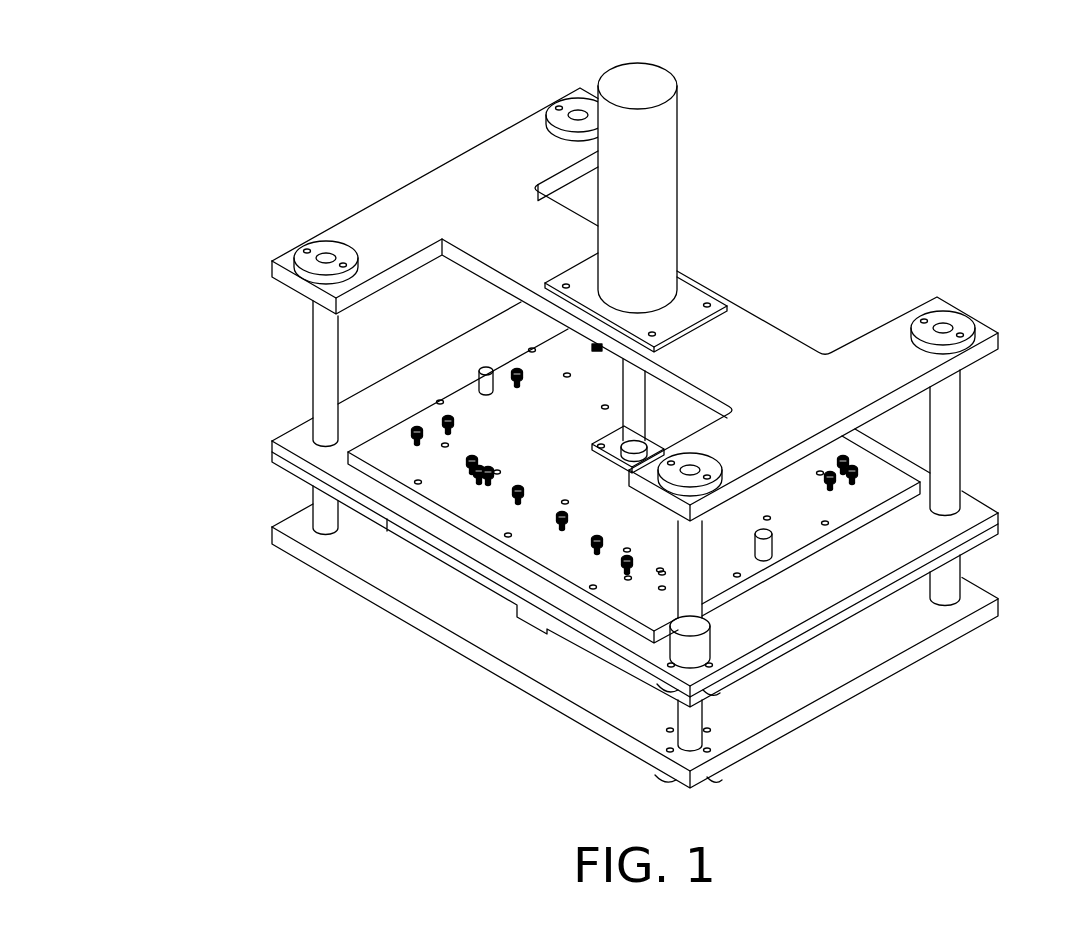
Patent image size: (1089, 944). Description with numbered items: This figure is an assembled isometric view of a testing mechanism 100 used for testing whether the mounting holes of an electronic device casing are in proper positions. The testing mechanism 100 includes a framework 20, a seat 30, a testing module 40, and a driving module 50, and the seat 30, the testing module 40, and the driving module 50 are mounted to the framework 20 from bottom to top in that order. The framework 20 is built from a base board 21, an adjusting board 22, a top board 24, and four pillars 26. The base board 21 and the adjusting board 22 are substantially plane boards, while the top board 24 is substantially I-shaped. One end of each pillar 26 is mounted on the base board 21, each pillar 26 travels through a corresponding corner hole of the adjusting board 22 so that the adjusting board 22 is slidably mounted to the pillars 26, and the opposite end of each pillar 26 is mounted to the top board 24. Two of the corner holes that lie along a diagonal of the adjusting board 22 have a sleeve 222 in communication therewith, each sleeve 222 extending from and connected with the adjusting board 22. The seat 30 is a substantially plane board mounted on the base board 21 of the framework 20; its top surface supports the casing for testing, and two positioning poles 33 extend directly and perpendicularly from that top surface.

The testing mechanism 100 is at (659, 34).
The framework 20 is at (190, 330).
The base board 21 is at (303, 522).
The adjusting board 22 is at (300, 443).
The sleeve 222 is at (700, 650).
The top board 24 is at (494, 252).
The pillar 26 is at (328, 362).
The seat 30 is at (568, 635).
The positioning pole 33 is at (770, 549).
The testing module 40 is at (500, 513).
The driving module 50 is at (646, 170).